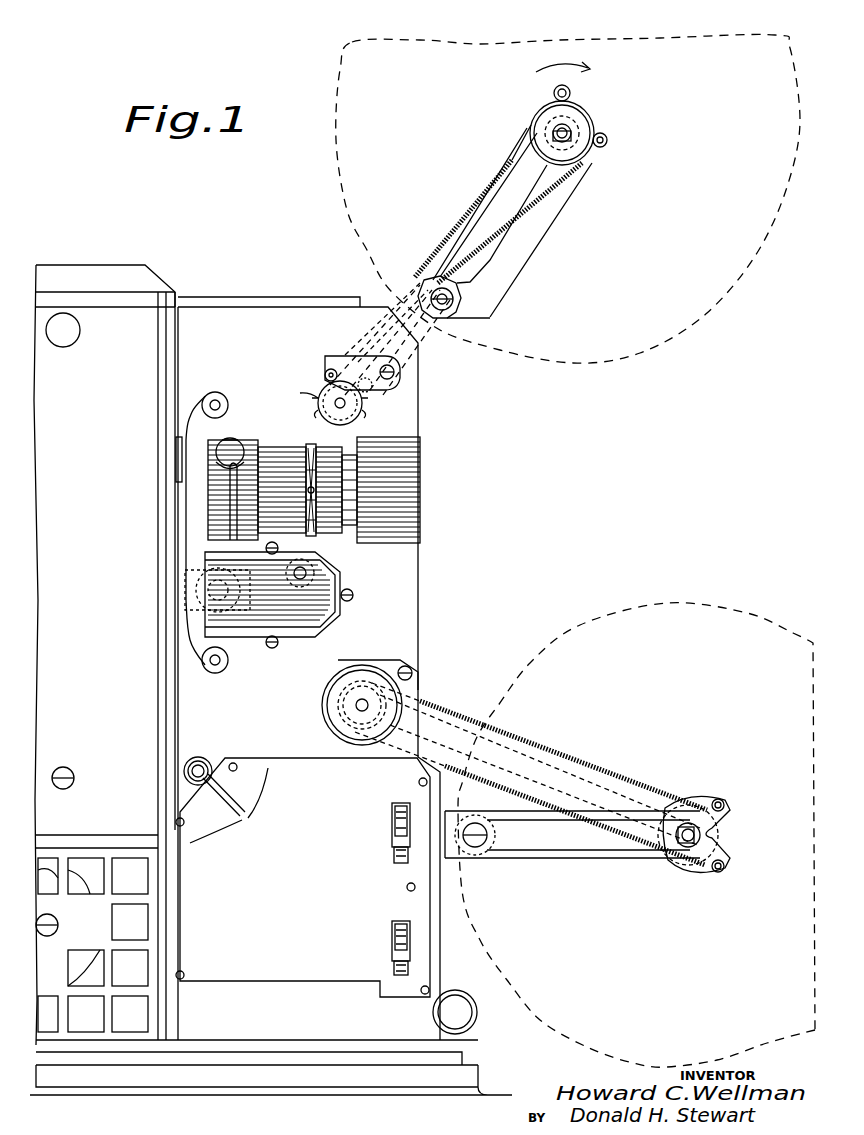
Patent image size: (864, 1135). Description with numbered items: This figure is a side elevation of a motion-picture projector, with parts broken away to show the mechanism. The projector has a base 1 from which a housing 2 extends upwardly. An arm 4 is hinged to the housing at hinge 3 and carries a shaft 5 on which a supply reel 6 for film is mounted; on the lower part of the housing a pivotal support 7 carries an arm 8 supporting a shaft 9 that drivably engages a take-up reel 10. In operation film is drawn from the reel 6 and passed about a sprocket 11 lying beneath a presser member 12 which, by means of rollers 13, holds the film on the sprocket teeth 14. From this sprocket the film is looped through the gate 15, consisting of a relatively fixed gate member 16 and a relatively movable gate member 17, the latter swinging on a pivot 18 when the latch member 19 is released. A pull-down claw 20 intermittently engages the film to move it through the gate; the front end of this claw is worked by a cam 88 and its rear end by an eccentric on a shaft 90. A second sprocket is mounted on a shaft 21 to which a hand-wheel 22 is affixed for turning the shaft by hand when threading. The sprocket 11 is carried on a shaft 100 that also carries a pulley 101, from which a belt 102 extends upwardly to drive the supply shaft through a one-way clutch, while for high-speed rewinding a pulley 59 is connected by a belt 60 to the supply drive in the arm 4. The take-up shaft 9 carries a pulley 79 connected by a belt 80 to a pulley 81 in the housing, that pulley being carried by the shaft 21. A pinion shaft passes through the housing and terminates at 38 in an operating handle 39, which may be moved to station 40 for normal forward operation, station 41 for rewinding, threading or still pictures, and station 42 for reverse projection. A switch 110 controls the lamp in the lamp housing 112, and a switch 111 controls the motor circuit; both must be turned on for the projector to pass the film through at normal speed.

The base 1 is at (282, 1080).
The housing 2 is at (420, 650).
The hinge 3 is at (450, 318).
The arm 4 is at (563, 205).
The shaft 5 is at (572, 126).
The reel 6 is at (788, 78).
The pivotal support 7 is at (478, 848).
The arm 8 is at (580, 850).
The shaft 9 is at (700, 838).
The reel 10 is at (750, 622).
The sprocket 11 is at (368, 404).
The presser member 12 is at (378, 343).
The rollers 13 is at (325, 378).
The sprocket teeth 14 is at (420, 432).
The gate 15 is at (178, 497).
The fixed gate member 16 is at (178, 527).
The movable gate member 17 is at (176, 440).
The pivot 18 is at (228, 660).
The latch member 19 is at (218, 390).
The claw 20 is at (190, 583).
The shaft 21 is at (362, 690).
The hand-wheel 22 is at (322, 708).
The shaft end 38 is at (184, 771).
The operating handle 39 is at (238, 806).
The forward station 40 is at (209, 849).
The rewind/threading/still station 41 is at (279, 829).
The reverse station 42 is at (298, 790).
The pulley 59 is at (240, 438).
The belt 60 is at (430, 248).
The pulley 79 is at (688, 808).
The belt 80 is at (573, 755).
The pulley 81 is at (425, 695).
The cam 88 is at (205, 600).
The shaft 90 is at (338, 567).
The shaft 100 is at (335, 400).
The pulley 101 is at (285, 450).
The belt 102 is at (462, 215).
The switch 110 is at (394, 968).
The switch 111 is at (395, 870).
The lamp housing 112 is at (112, 300).